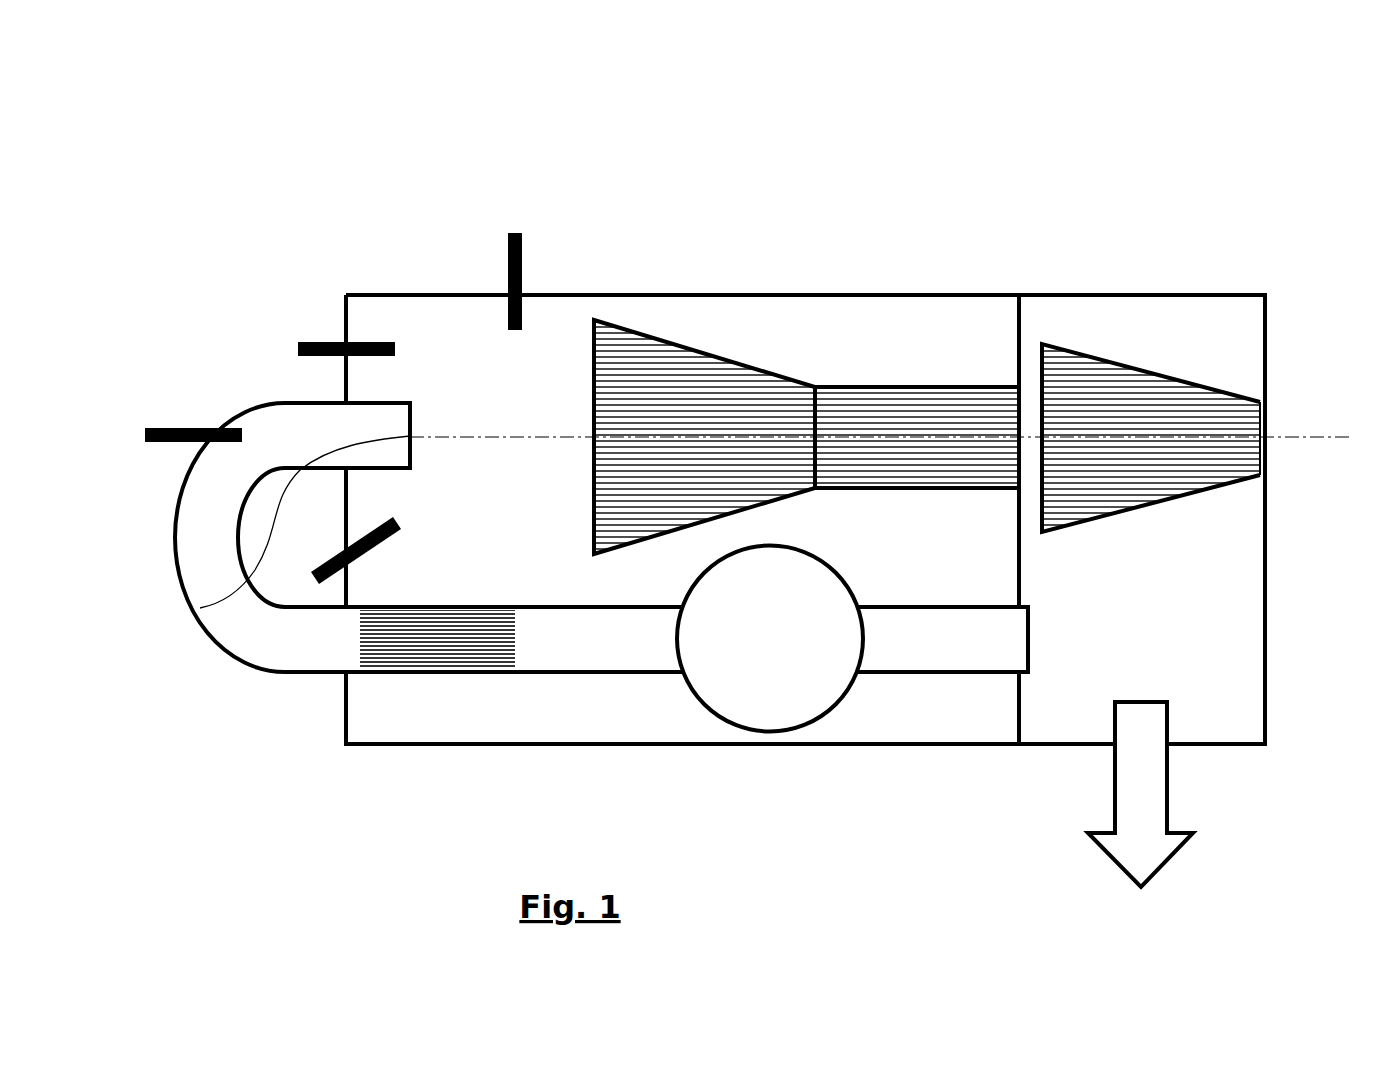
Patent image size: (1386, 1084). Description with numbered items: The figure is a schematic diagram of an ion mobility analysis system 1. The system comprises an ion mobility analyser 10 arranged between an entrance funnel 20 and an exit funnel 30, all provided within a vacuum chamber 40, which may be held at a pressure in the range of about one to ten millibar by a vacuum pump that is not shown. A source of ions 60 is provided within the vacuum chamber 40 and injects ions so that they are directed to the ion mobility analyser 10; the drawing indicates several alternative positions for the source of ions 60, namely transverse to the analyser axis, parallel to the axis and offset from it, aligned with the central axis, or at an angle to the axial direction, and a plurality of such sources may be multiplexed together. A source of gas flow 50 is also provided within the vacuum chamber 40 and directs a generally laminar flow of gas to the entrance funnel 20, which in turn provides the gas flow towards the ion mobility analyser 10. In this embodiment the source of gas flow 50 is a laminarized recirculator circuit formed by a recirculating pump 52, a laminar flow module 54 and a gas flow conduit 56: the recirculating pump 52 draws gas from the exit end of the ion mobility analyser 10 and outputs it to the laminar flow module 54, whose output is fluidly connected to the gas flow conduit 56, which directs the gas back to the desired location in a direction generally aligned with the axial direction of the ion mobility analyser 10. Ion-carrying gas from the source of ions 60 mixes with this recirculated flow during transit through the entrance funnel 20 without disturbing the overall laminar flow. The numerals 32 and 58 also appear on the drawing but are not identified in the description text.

The ion mobility analysis system 1 is at (961, 176).
The ion mobility analyser 10 is at (960, 385).
The entrance funnel 20 is at (684, 345).
The exit funnel 30 is at (1190, 382).
The nozzle outlet 32 is at (1268, 413).
The vacuum chamber 40 is at (851, 750).
The source of gas flow 50 is at (291, 400).
The recirculating pump 52 is at (749, 735).
The laminar flow module 54 is at (420, 673).
The gas flow conduit 56 is at (1018, 650).
The guide vane 58 is at (200, 608).
The source of ions 60 is at (515, 233).